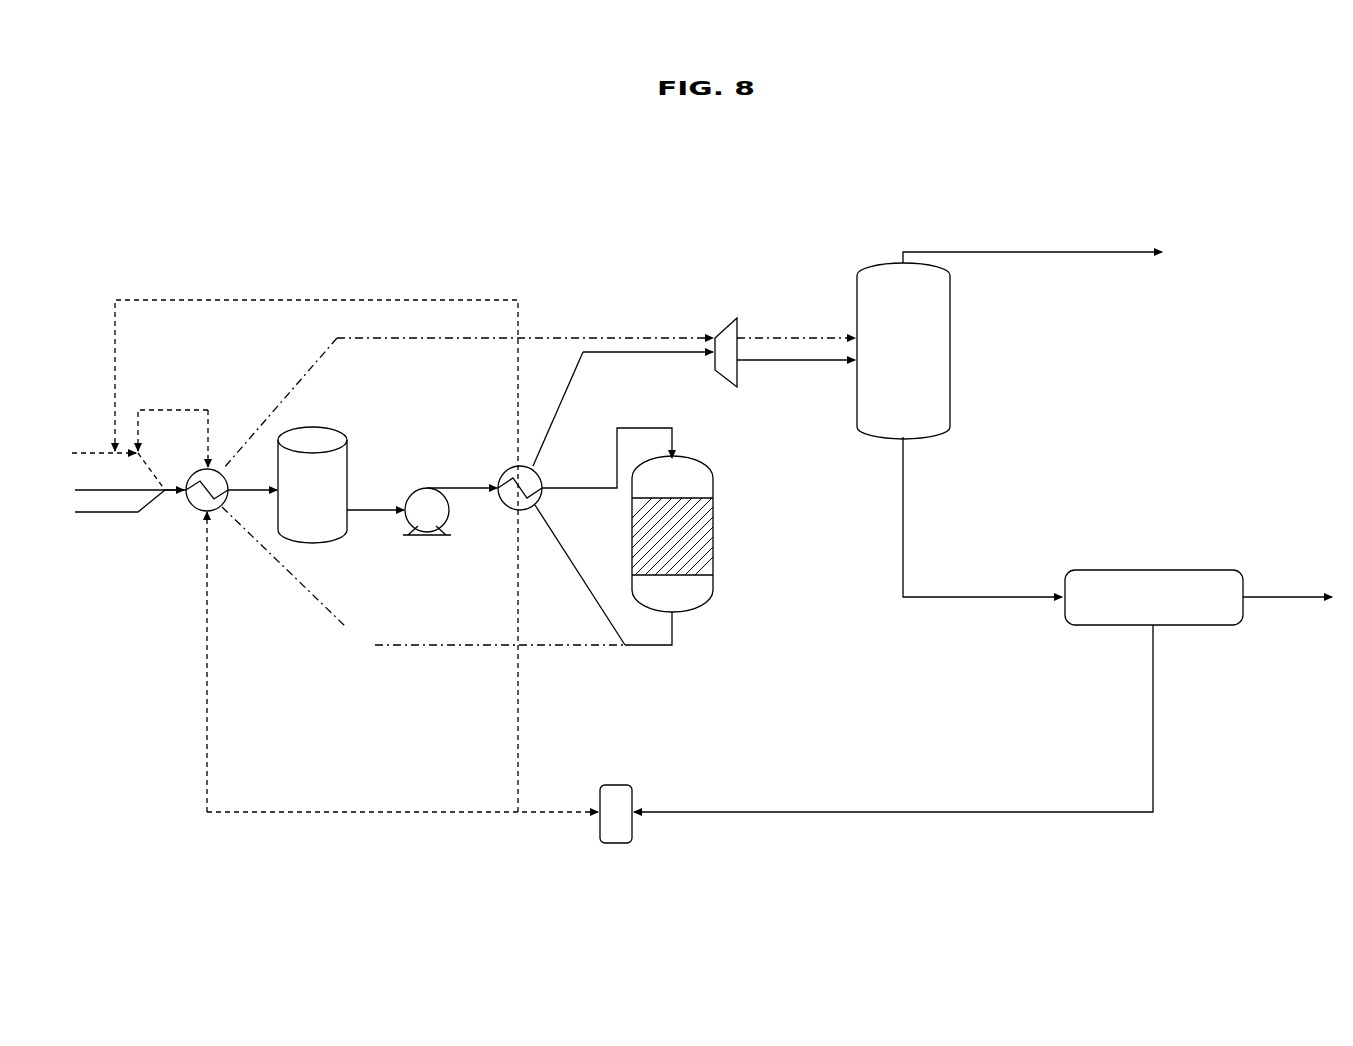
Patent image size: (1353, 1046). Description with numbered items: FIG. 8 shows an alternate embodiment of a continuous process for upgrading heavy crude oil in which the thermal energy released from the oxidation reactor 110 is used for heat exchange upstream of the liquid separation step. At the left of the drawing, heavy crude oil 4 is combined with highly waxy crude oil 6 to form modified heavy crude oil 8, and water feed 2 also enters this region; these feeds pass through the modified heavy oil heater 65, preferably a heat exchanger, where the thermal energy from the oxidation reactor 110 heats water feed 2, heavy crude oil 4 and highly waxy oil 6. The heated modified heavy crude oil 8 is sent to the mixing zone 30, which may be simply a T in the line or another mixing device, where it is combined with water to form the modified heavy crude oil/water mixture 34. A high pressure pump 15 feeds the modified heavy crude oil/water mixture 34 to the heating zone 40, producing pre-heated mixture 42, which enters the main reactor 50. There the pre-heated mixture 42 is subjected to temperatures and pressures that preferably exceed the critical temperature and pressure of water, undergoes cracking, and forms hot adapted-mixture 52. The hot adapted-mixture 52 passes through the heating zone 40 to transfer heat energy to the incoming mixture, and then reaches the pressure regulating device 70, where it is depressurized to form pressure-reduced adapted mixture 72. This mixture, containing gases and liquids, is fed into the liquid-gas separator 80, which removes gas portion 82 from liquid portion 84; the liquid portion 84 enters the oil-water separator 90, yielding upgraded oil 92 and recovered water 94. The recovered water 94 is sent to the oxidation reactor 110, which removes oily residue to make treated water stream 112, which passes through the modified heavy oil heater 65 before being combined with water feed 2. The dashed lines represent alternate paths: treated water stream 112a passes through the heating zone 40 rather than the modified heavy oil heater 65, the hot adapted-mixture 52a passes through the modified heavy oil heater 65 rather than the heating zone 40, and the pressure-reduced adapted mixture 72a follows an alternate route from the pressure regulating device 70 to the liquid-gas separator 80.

The water feed 2 is at (110, 455).
The heavy crude oil 4 is at (112, 489).
The highly waxy crude oil 6 is at (130, 512).
The modified heavy crude oil 8 is at (188, 482).
The high pressure pump 15 is at (427, 486).
The mixing zone 30 is at (312, 485).
The modified heavy crude oil/water mixture 34 is at (382, 512).
The heating zone 40 is at (505, 472).
The pre-heated mixture 42 is at (650, 428).
The main reactor 50 is at (670, 534).
The hot adapted-mixture 52 is at (592, 388).
The hot adapted-mixture alternate path 52a is at (328, 340).
The modified heavy oil heater 65 is at (200, 510).
The pressure regulating device 70 is at (738, 388).
The pressure-reduced adapted mixture 72 is at (770, 362).
The pressure-reduced adapted mixture alternate path 72a is at (827, 338).
The liquid-gas separator 80 is at (903, 351).
The gas portion 82 is at (1052, 252).
The liquid portion 84 is at (1000, 590).
The oil-water separator 90 is at (1154, 597).
The upgraded oil 92 is at (1322, 596).
The recovered water 94 is at (888, 812).
The oxidation reactor 110 is at (617, 785).
The treated water stream 112 is at (208, 410).
The treated water stream alternate path 112a is at (238, 300).